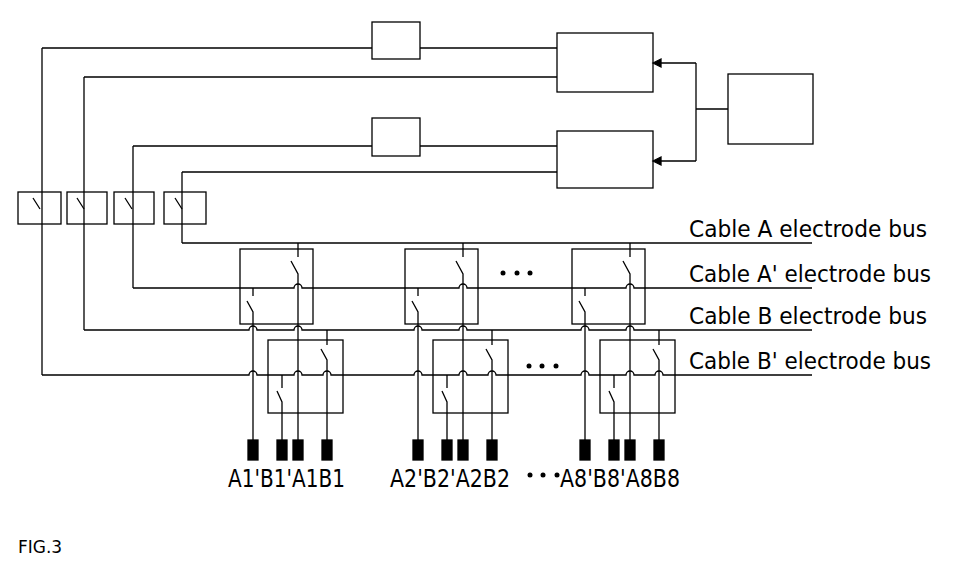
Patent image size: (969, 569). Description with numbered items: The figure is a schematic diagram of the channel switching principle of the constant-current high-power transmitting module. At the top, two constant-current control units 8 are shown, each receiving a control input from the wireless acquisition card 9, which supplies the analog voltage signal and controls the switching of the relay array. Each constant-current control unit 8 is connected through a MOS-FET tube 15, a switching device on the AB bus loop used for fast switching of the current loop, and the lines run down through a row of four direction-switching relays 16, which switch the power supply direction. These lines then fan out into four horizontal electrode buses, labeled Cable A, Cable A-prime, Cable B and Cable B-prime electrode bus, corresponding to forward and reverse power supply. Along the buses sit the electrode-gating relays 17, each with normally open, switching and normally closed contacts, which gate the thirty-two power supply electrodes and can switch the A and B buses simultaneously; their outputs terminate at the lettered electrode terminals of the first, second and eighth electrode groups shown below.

The constant-current control unit 8 is at (595, 108).
The wireless acquisition card 9 is at (733, 112).
The MOS-FET tube 15 is at (396, 89).
The direction-switching relay 16 is at (112, 208).
The electrode-gating relay 17 is at (457, 351).